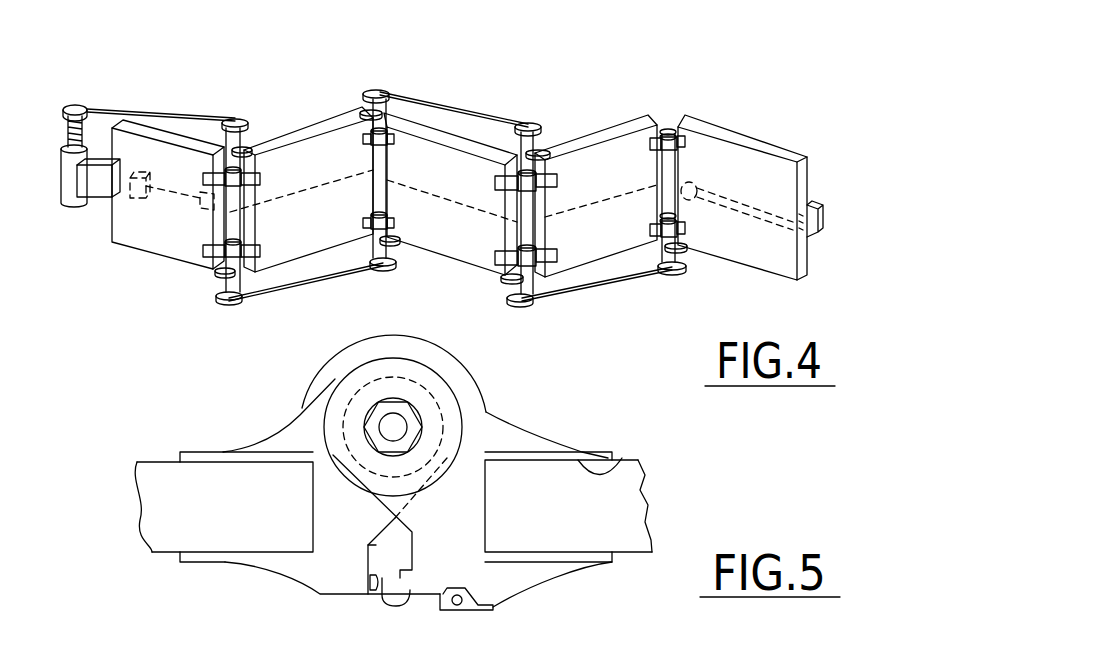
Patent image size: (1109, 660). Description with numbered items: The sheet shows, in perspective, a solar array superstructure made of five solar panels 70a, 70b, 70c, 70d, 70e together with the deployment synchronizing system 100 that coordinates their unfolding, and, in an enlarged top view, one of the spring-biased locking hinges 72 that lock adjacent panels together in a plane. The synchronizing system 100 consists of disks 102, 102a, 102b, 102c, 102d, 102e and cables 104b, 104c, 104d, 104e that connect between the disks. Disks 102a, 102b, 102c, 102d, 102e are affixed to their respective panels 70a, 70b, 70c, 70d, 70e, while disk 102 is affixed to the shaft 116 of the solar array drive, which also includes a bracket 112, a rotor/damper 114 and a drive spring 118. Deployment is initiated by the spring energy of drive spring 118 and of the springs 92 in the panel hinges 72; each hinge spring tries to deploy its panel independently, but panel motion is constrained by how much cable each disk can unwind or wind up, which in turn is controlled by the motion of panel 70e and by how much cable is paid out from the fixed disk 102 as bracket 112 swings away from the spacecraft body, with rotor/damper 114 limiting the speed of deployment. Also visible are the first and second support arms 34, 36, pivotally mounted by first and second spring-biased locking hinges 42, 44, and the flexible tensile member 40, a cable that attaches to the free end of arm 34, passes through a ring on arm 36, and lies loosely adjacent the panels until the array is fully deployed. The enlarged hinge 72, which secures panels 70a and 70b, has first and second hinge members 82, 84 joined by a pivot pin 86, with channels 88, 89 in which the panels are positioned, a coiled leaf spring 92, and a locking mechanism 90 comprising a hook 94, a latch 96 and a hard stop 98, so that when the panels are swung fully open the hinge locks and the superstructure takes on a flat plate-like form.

In FIG. 4, the deployment synchronizing system 100 is at (208, 40).
In FIG. 4, the disk 102 is at (80, 108).
In FIG. 4, the disk 102a is at (688, 266).
In FIG. 4, the disk 102b is at (535, 116).
In FIG. 4, the disk 102c is at (398, 270).
In FIG. 4, the disk 102d is at (379, 86).
In FIG. 4, the disk 102e is at (240, 300).
In FIG. 4, the cable 104b is at (623, 285).
In FIG. 4, the cable 104c is at (453, 102).
In FIG. 4, the cable 104d is at (356, 278).
In FIG. 4, the cable 104e is at (183, 108).
In FIG. 4, the solar panel 70a is at (786, 276).
In FIG. 5, the solar panel 70a is at (627, 493).
In FIG. 4, the solar panel 70b is at (613, 143).
In FIG. 5, the solar panel 70b is at (162, 508).
In FIG. 4, the solar panel 70c is at (450, 252).
In FIG. 4, the solar panel 70d is at (328, 128).
In FIG. 4, the solar panel 70e is at (147, 245).
In FIG. 4, the spring-biased locking hinge 72 is at (263, 167).
In FIG. 5, the spring-biased locking hinge 72 is at (503, 450).
In FIG. 4, the flexible tensile member 40 is at (450, 192).
In FIG. 4, the first support arm 34 is at (754, 205).
In FIG. 4, the first spring-biased locking hinge 42 is at (824, 220).
In FIG. 4, the second spring-biased locking hinge 44 is at (128, 213).
In FIG. 4, the second support arm 36 is at (172, 264).
In FIG. 4, the bracket 112 is at (106, 205).
In FIG. 4, the rotor/damper 114 is at (63, 206).
In FIG. 4, the shaft 116 is at (88, 127).
In FIG. 4, the drive spring 118 is at (56, 112).
In FIG. 5, the first hinge member 82 is at (333, 558).
In FIG. 5, the second hinge member 84 is at (478, 607).
In FIG. 5, the pivot pin 86 is at (400, 428).
In FIG. 5, the channel 88 is at (206, 460).
In FIG. 5, the channel 89 is at (624, 458).
In FIG. 5, the locking mechanism 90 is at (422, 620).
In FIG. 5, the coiled leaf spring 92 is at (310, 393).
In FIG. 5, the hook 94 is at (393, 580).
In FIG. 5, the latch 96 is at (370, 603).
In FIG. 5, the hard stop 98 is at (402, 608).